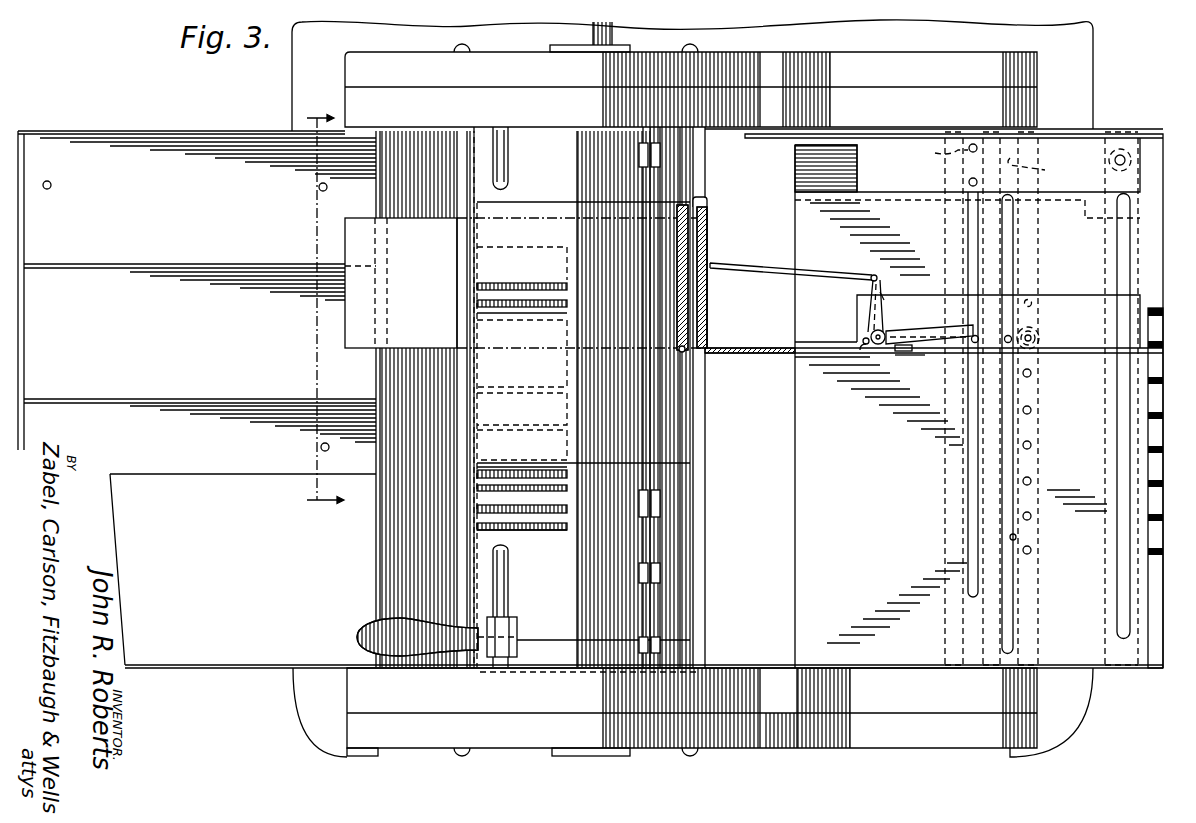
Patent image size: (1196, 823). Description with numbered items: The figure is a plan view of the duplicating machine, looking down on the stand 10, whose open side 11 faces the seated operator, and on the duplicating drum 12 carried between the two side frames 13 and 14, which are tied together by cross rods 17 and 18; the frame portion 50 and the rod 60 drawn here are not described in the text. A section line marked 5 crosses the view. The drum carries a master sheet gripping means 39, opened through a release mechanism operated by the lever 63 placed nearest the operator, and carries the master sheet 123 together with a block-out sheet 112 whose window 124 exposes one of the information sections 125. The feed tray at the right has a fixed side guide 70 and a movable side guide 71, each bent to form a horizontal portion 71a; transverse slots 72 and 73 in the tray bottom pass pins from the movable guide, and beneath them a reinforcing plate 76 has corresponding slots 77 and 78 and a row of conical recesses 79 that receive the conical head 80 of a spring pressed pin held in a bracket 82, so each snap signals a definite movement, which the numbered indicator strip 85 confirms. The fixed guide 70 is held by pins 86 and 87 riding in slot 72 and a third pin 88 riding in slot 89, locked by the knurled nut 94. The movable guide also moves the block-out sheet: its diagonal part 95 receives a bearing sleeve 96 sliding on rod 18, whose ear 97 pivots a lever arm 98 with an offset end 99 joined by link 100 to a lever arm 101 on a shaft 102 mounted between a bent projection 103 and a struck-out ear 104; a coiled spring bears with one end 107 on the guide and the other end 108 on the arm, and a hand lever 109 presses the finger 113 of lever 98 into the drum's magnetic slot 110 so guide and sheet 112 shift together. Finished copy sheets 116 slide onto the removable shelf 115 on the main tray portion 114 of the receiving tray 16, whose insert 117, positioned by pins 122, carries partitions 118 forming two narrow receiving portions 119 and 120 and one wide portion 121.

The stand 10 is at (1082, 728).
The open side of stand 11 is at (423, 752).
The duplicating drum 12 is at (563, 147).
The side frame 13 is at (723, 53).
The side frame 14 is at (903, 738).
The receiving tray 16 is at (1119, 670).
The cross rod 17 is at (462, 583).
The cross tie rod 18 is at (700, 602).
The master sheet gripping means 39 is at (640, 583).
The frame 50 is at (1083, 80).
The rod 60 is at (508, 590).
The lever 63 is at (358, 636).
The fixed side guide 70 is at (1157, 134).
The movable side guide 71 is at (1063, 355).
The horizontal portion 71a is at (1057, 305).
The slot 72 is at (972, 533).
The slot 73 is at (1016, 536).
The plate 76 is at (945, 229).
The slot 77 is at (938, 151).
The slot 78 is at (1040, 172).
The conical recesses 79 is at (1031, 376).
The conical head 80 is at (1040, 338).
The bracket 82 is at (1033, 307).
The visual indicator strip 85 is at (1167, 300).
The pin 86 is at (968, 182).
The pin 87 is at (974, 144).
The pin 88 is at (1125, 165).
The slot 89 is at (1130, 238).
The knurled nut 94 is at (1135, 160).
The upwardly and diagonally extending part 95 is at (760, 353).
The bearing sleeve 96 is at (707, 310).
The ear 97 is at (708, 218).
The lever arm 98 is at (716, 186).
The offset end 99 is at (708, 238).
The link 100 is at (764, 268).
The lever arm 101 is at (877, 277).
The shaft 102 is at (888, 331).
The projection 103 is at (893, 332).
The ear 104 is at (862, 348).
The spring end 107 is at (905, 352).
The spring end 108 is at (883, 293).
The hand lever 109 is at (927, 357).
The block-out sheet receiving slot 110 is at (662, 153).
The block-out sheet 112 is at (615, 464).
The finger 113 is at (676, 207).
The main tray portion 114 is at (218, 668).
The removable ledge or shelf 115 is at (378, 558).
The copy sheet 116 is at (1085, 217).
The insert 117 is at (219, 476).
The partitions 118 is at (197, 404).
The narrow receiving portion 119 is at (188, 148).
The narrow receiving portion 120 is at (245, 283).
The wide receiving portion 121 is at (185, 638).
The pins 122 is at (328, 445).
The master sheet 123 is at (580, 641).
The window 124 is at (567, 303).
The sections 125 is at (567, 524).
The section line 5 is at (323, 312).